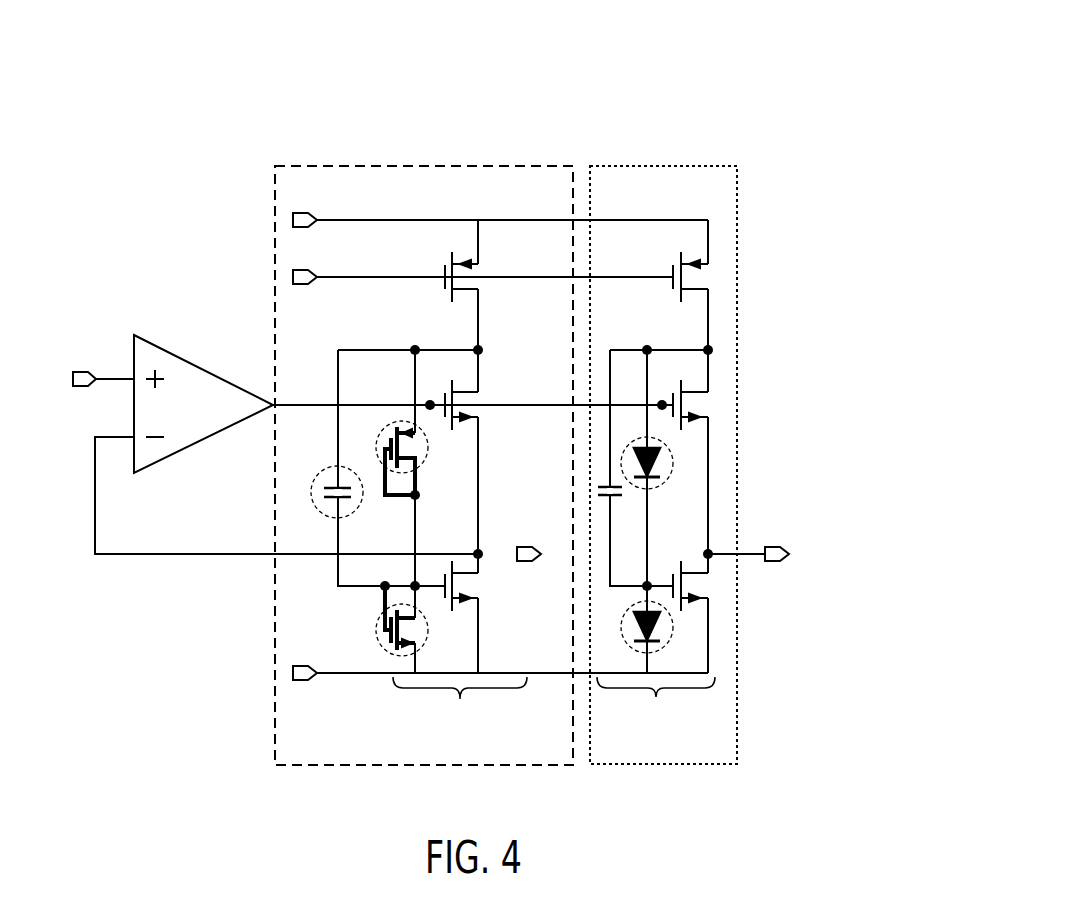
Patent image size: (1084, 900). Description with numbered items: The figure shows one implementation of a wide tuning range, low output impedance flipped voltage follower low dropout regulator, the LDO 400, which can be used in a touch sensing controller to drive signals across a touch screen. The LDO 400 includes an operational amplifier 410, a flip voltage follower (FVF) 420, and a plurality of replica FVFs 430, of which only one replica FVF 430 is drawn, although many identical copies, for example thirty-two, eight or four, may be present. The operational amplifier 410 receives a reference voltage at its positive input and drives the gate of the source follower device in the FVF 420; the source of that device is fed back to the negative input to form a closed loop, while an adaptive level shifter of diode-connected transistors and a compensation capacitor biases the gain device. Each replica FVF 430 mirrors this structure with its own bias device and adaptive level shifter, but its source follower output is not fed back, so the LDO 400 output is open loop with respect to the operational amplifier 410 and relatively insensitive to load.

The LDO 400 is at (688, 72).
The operational amplifier 410 is at (200, 365).
The flip voltage follower 420 is at (402, 166).
The replica FVF 430 is at (640, 166).